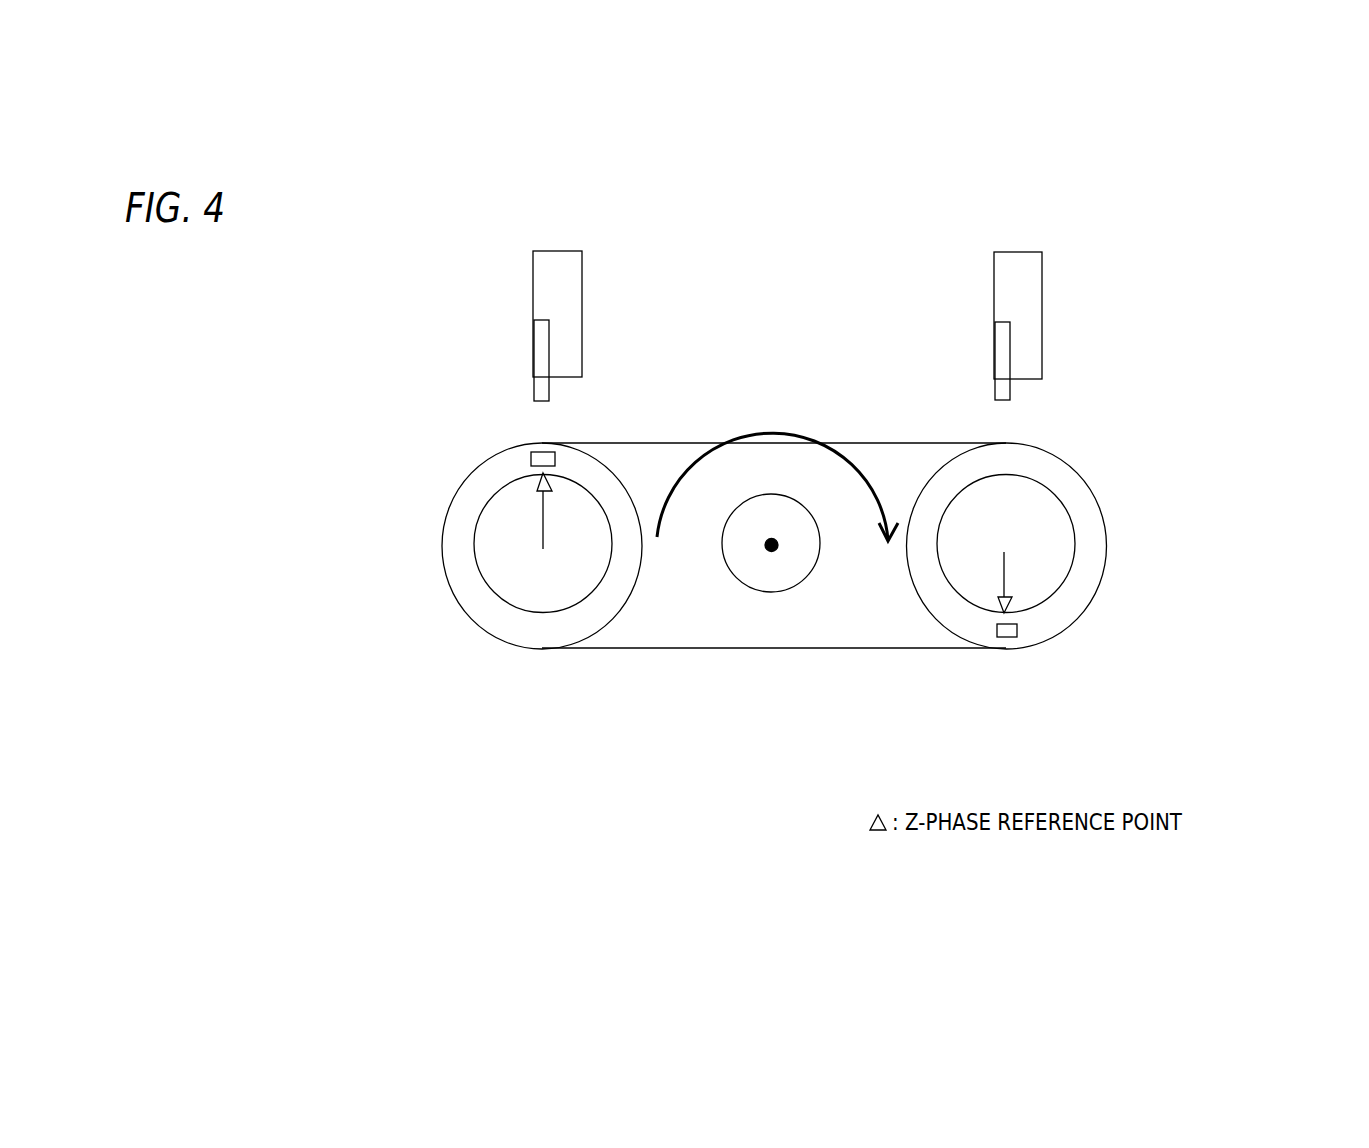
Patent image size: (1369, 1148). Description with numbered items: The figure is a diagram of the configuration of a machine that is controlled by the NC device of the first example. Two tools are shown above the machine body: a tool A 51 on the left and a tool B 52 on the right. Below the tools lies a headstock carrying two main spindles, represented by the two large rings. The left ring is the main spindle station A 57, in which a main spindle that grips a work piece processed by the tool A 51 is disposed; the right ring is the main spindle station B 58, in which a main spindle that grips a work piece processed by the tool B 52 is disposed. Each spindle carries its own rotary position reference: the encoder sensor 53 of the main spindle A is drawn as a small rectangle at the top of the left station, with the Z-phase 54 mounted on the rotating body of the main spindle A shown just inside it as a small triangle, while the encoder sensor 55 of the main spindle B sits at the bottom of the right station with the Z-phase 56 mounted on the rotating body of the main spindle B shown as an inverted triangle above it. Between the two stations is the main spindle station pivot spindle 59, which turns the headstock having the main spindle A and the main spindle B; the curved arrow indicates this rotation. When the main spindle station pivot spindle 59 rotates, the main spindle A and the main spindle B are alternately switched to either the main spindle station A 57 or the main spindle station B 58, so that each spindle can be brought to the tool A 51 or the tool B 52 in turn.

The tool A 51 is at (537, 392).
The tool B 52 is at (997, 392).
The encoder sensor of main spindle A 53 is at (531, 458).
The Z-phase of main spindle A 54 is at (538, 490).
The encoder sensor of main spindle B 55 is at (1017, 633).
The Z-phase of main spindle B 56 is at (1012, 600).
The main spindle station A 57 is at (525, 576).
The main spindle station B 58 is at (1011, 576).
The main spindle station pivot spindle 59 is at (775, 593).